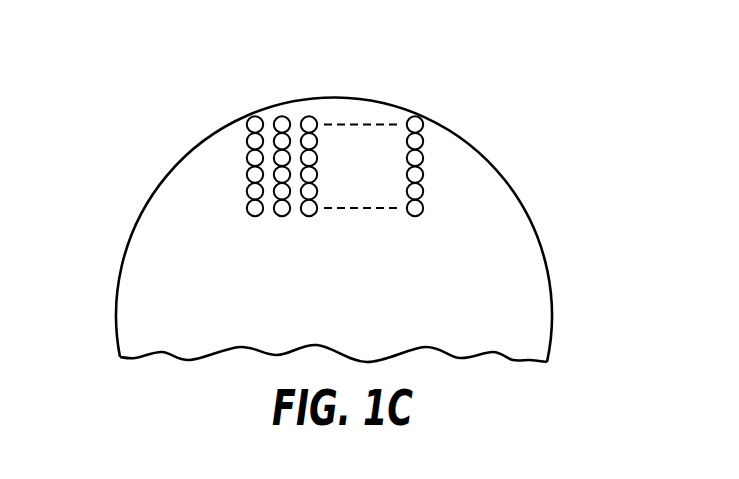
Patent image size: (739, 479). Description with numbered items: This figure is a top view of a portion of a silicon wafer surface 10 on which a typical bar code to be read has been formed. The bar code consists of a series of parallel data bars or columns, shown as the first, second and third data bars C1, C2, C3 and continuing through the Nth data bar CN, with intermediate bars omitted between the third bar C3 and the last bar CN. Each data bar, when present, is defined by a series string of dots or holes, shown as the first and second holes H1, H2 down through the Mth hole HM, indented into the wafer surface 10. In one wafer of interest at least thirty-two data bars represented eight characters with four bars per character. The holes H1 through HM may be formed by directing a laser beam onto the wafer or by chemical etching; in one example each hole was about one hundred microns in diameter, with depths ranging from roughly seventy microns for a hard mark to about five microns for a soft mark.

The silicon wafer surface 10 is at (128, 322).
The first data bar C1 is at (254, 116).
The second data bar C2 is at (282, 116).
The third data bar C3 is at (310, 116).
The Nth data bar CN is at (415, 117).
The first hole H1 is at (247, 124).
The second hole H2 is at (246, 141).
The Mth hole HM is at (246, 207).